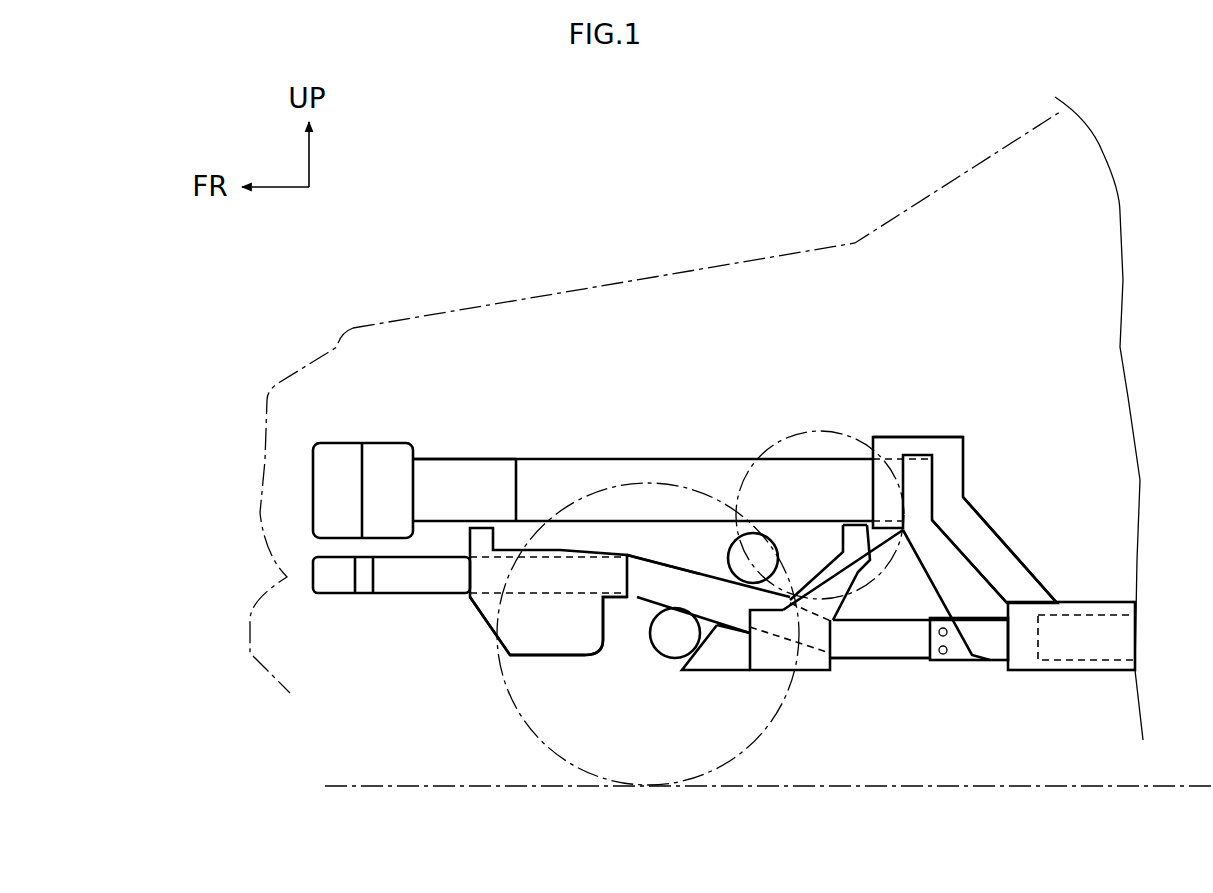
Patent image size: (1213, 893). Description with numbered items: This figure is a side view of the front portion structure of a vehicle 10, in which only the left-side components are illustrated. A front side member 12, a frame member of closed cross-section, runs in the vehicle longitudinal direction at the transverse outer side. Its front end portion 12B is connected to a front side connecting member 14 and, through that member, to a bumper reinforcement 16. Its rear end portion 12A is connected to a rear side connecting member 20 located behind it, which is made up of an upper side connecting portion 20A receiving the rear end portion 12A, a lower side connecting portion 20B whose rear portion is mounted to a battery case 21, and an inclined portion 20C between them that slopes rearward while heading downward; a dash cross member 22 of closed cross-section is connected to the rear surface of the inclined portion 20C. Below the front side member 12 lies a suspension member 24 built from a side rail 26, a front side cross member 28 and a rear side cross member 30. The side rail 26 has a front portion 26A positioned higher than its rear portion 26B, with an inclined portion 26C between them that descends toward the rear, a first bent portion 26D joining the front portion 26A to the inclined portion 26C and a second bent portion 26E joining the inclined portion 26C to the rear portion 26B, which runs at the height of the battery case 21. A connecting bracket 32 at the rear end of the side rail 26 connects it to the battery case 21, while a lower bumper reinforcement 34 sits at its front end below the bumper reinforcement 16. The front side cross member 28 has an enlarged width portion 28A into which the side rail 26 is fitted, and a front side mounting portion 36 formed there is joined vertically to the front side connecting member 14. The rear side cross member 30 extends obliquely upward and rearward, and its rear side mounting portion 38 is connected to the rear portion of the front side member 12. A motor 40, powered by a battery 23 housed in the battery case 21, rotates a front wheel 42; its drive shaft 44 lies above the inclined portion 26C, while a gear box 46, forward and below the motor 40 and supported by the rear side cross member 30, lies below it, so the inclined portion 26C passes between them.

The vehicle 10 is at (577, 226).
The front side member 12 is at (640, 456).
The rear end portion 12A is at (903, 458).
The front end portion 12B is at (543, 457).
The front side connecting member 14 is at (455, 455).
The bumper reinforcement 16 is at (342, 442).
The rear side connecting member 20 is at (944, 437).
The upper side connecting portion 20A is at (880, 437).
The lower side connecting portion 20B is at (993, 660).
The inclined portion 20C is at (987, 583).
The battery case 21 is at (1117, 595).
The dash cross member 22 is at (982, 517).
The battery 23 is at (1107, 660).
The suspension member 24 is at (868, 672).
The side rail 26 is at (686, 566).
The front portion 26A is at (405, 598).
The rear portion 26B is at (900, 660).
The inclined portion 26C is at (630, 597).
The first bent portion 26D is at (637, 557).
The second bent portion 26E is at (835, 662).
The front side cross member 28 is at (530, 659).
The enlarged width portion 28A is at (553, 657).
The rear side cross member 30 is at (800, 674).
The connecting bracket 32 is at (953, 660).
The lower bumper reinforcement 34 is at (343, 597).
The front side mounting portion 36 is at (470, 537).
The rear side mounting portion 38 is at (850, 524).
The motor 40 is at (770, 450).
The front wheel 42 is at (738, 755).
The drive shaft 44 is at (777, 540).
The gear box 46 is at (672, 660).